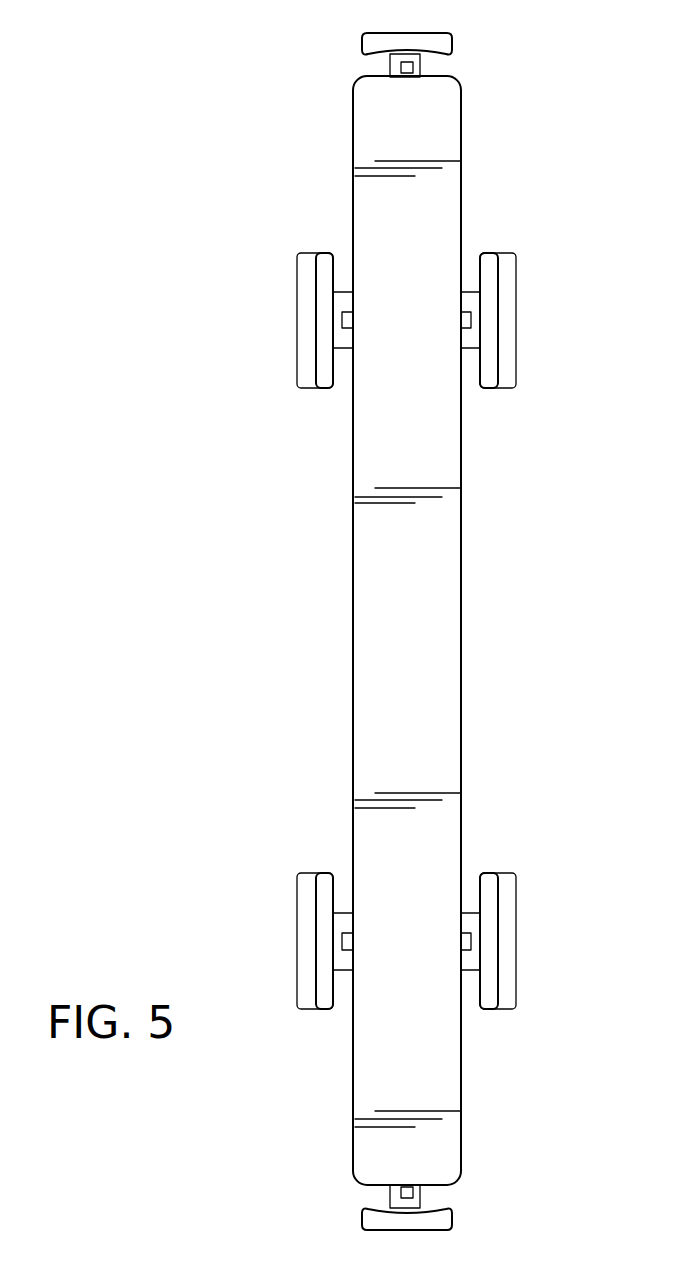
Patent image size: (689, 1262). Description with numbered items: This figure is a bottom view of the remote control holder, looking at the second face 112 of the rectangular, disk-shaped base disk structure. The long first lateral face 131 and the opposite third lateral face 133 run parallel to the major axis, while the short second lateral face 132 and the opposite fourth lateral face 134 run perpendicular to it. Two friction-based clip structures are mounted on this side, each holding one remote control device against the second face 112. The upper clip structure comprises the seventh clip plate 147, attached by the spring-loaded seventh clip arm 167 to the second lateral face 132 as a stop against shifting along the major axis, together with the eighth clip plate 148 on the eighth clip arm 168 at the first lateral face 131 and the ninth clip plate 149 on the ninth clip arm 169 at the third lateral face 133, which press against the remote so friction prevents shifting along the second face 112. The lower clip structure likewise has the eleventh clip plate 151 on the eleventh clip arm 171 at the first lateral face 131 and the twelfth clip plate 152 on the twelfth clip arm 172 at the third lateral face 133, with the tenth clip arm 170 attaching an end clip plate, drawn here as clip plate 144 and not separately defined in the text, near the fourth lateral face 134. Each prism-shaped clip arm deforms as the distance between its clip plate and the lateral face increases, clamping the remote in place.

The second face 112 is at (425, 712).
The first lateral face 131 is at (448, 672).
The second lateral face 132 is at (406, 90).
The third lateral face 133 is at (366, 480).
The fourth lateral face 134 is at (417, 1173).
The bottom end cap 144 is at (440, 1213).
The seventh clip plate 147 is at (436, 40).
The eighth clip plate 148 is at (310, 308).
The ninth clip plate 149 is at (503, 382).
The eleventh clip plate 151 is at (300, 920).
The twelfth clip plate 152 is at (505, 888).
The seventh clip arm 167 is at (420, 63).
The eighth clip arm 168 is at (340, 342).
The ninth clip arm 169 is at (465, 345).
The tenth clip arm 170 is at (420, 1200).
The eleventh clip arm 171 is at (343, 960).
The twelfth clip arm 172 is at (467, 967).